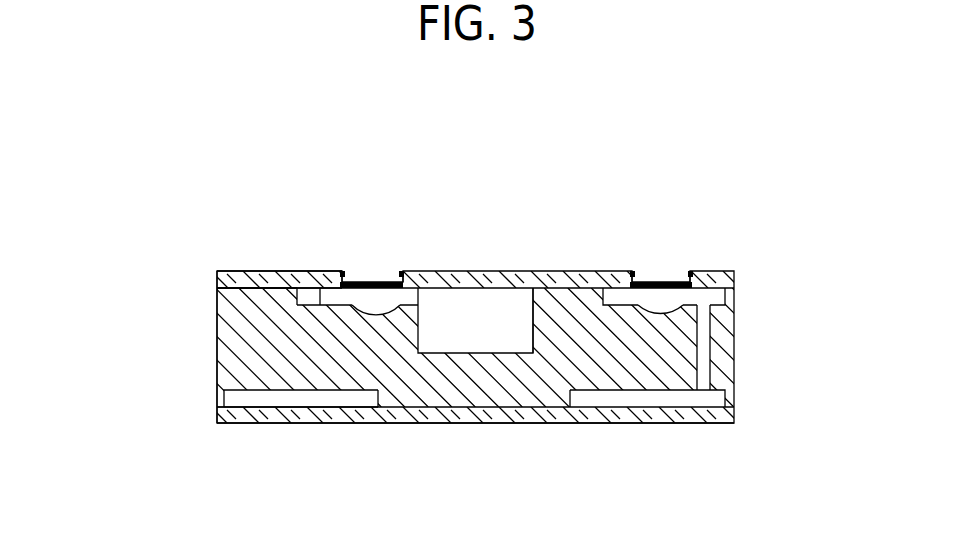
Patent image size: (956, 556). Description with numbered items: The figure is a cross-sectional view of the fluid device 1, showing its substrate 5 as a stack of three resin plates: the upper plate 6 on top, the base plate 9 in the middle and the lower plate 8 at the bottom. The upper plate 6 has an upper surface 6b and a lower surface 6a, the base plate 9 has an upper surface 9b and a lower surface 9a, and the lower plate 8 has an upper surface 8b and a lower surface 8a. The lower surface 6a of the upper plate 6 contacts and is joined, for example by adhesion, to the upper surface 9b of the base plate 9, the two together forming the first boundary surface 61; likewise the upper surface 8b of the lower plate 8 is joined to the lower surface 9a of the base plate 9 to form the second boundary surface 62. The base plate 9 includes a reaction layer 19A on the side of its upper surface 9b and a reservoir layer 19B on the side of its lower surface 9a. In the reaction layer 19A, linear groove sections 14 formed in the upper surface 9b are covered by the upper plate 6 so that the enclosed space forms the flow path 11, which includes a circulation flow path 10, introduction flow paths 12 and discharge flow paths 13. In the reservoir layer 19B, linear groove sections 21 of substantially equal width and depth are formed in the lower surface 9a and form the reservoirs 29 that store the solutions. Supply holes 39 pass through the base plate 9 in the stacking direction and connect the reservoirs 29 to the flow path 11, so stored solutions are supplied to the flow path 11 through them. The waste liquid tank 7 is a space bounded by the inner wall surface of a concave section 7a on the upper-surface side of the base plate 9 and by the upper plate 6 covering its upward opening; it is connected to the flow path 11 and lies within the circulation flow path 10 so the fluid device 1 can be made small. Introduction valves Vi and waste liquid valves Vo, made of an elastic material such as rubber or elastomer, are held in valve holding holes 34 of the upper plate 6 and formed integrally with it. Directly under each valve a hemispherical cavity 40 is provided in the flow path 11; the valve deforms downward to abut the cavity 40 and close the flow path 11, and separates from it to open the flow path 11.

The fluid device 1 is at (748, 110).
The substrate 5 is at (808, 270).
The upper plate 6 is at (735, 278).
The lower surface of the upper plate 6a is at (228, 286).
The upper surface of the upper plate 6b is at (237, 283).
The waste liquid tank 7 is at (507, 327).
The concave section 7a is at (528, 302).
The lower plate 8 is at (727, 412).
The lower surface of the lower plate 8a is at (285, 423).
The upper surface of the lower plate 8b is at (272, 407).
The base plate 9 is at (730, 345).
The lower surface of the base plate 9a is at (217, 423).
The upper surface of the base plate 9b is at (258, 300).
The circulation flow path 10 is at (320, 285).
The flow path 11 is at (283, 291).
The introduction flow path 12 is at (703, 310).
The discharge flow path 13 is at (415, 292).
The groove section 14 is at (313, 297).
The reaction layer 19A is at (205, 297).
The reservoir layer 19B is at (205, 397).
The groove section 21 is at (378, 400).
The reservoir 29 is at (332, 393).
The valve holding hole 34 is at (398, 276).
The supply hole 39 is at (715, 290).
The hemispherical cavity 40 is at (368, 308).
The first boundary surface 61 is at (217, 272).
The second boundary surface 62 is at (217, 420).
The waste liquid valve Vo is at (383, 283).
The introduction valve Vi is at (678, 285).